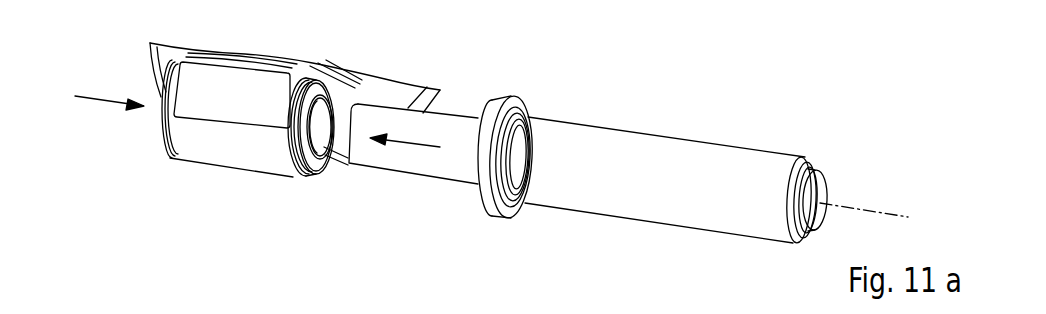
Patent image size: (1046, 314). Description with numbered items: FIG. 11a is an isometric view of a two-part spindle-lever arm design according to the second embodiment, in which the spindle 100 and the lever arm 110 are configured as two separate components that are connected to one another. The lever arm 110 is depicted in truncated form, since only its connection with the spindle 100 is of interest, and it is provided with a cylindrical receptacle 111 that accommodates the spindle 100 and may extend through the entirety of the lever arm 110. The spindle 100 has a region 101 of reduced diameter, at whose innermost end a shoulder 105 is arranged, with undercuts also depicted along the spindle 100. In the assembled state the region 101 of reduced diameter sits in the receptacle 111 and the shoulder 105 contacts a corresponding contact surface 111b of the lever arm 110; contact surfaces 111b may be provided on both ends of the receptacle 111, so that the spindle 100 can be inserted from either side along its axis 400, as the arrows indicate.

The spindle 100 is at (651, 132).
The region of reduced diameter 101 is at (451, 133).
The shoulder 105 is at (490, 206).
The lever arm 110 is at (208, 169).
The cylindrical receptacle 111 is at (328, 160).
The contact surface 111b is at (157, 135).
The axis 400 is at (862, 207).